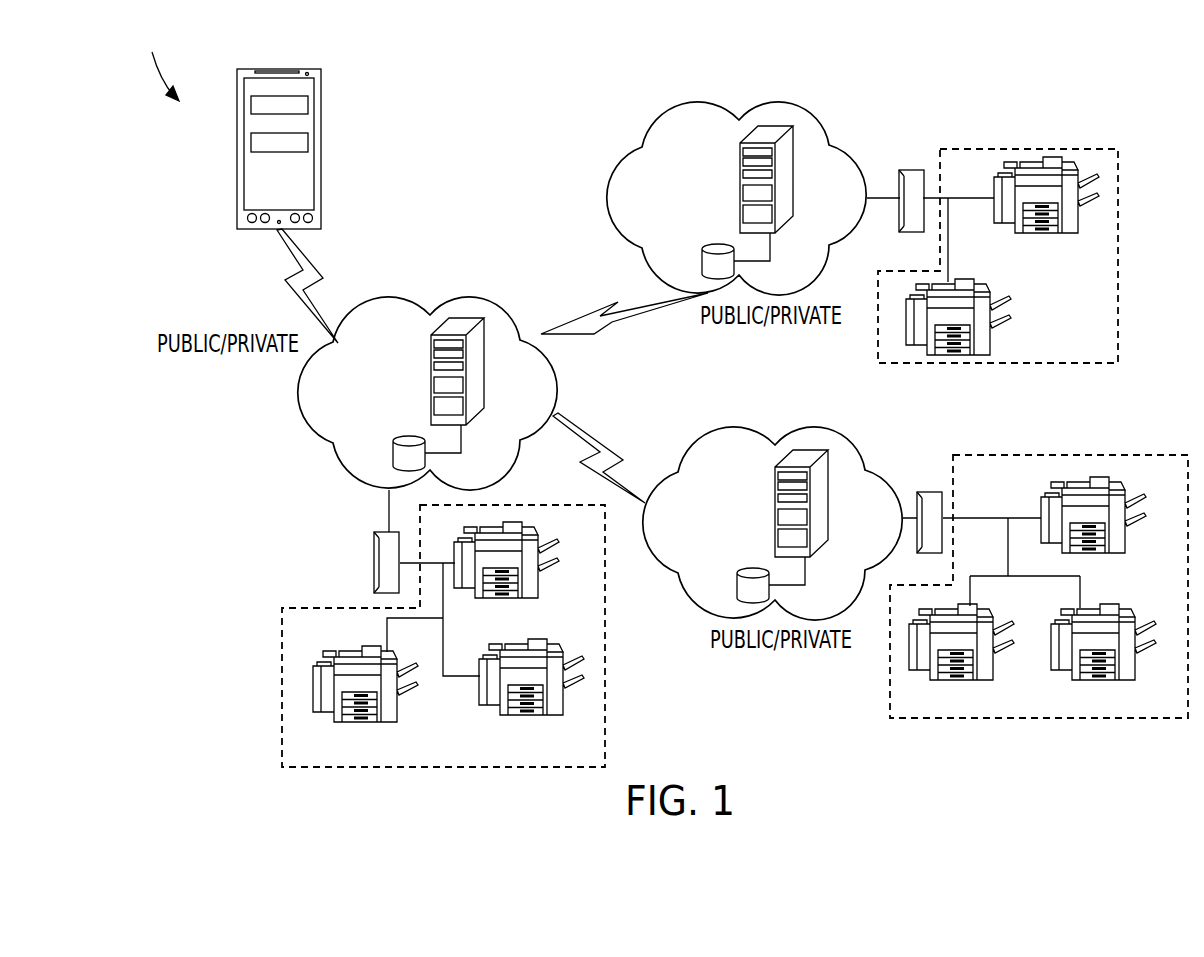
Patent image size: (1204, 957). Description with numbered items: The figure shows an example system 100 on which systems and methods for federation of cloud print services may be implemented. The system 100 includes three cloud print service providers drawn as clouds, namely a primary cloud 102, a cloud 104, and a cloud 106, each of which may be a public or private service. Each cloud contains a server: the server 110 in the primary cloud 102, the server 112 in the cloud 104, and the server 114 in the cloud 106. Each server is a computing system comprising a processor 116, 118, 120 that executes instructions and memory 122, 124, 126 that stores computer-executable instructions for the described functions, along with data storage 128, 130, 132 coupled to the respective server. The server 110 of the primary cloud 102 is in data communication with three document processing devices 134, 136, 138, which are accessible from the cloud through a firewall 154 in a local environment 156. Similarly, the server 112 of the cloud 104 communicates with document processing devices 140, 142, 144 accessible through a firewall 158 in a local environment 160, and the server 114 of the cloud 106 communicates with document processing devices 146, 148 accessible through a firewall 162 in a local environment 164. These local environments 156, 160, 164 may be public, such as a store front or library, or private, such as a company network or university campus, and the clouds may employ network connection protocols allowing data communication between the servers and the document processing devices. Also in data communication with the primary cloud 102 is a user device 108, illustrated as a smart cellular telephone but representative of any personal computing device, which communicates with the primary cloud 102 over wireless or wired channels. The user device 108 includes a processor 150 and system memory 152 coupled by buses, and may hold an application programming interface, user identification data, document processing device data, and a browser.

The system 100 is at (158, 62).
The primary cloud 102 is at (442, 301).
The cloud 104 is at (806, 428).
The cloud 106 is at (780, 102).
The user device 108 is at (306, 116).
The server 110 is at (446, 385).
The server 112 is at (789, 517).
The server 114 is at (754, 193).
The processor 116 is at (415, 376).
The processor 118 is at (757, 507).
The processor 120 is at (722, 182).
The memory 122 is at (482, 396).
The memory 124 is at (825, 526).
The memory 126 is at (790, 204).
The data storage 128 is at (397, 437).
The data storage 130 is at (740, 566).
The data storage 132 is at (704, 244).
The document processing device 134 is at (360, 726).
The document processing device 136 is at (522, 723).
The document processing device 138 is at (542, 586).
The document processing device 140 is at (992, 678).
The document processing device 142 is at (1138, 669).
The document processing device 144 is at (1125, 542).
The document processing device 146 is at (990, 345).
The document processing device 148 is at (1062, 233).
The processor 150 is at (310, 101).
The system memory 152 is at (310, 143).
The firewall 154 is at (373, 541).
The local environment 156 is at (312, 607).
The firewall 158 is at (930, 493).
The local environment 160 is at (1002, 454).
The firewall 162 is at (912, 171).
The local environment 164 is at (990, 148).